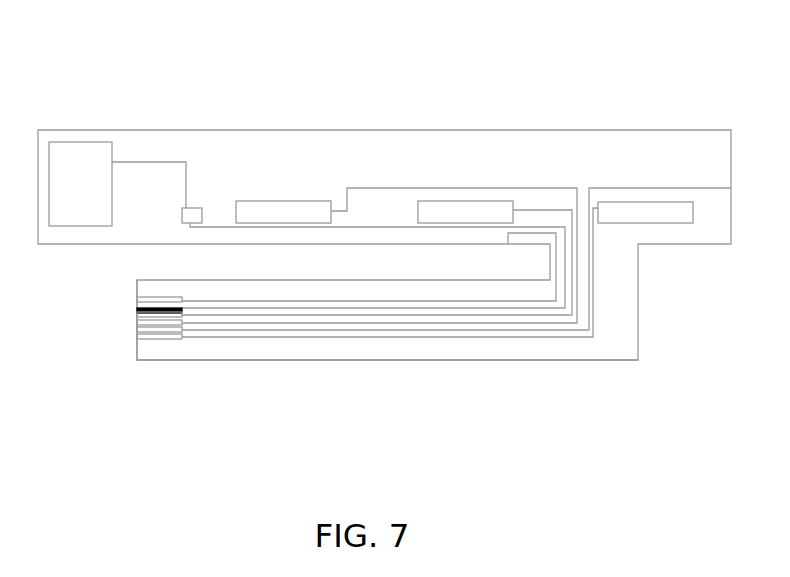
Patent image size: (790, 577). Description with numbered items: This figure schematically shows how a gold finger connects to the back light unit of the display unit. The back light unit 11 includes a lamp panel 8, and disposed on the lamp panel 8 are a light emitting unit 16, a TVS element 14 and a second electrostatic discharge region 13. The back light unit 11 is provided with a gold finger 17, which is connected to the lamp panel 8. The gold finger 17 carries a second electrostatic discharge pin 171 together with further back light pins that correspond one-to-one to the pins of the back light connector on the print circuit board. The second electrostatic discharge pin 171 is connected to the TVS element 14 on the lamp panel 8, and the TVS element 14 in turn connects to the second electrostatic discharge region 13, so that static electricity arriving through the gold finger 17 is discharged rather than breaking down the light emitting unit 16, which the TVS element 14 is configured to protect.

The lamp panel 8 is at (401, 148).
The back light unit 11 is at (498, 130).
The second electrostatic discharge region 13 is at (83, 142).
The TVS element 14 is at (193, 208).
The light emitting unit 16 is at (284, 201).
The gold finger 17 is at (273, 360).
The second electrostatic discharge pin 171 is at (137, 312).